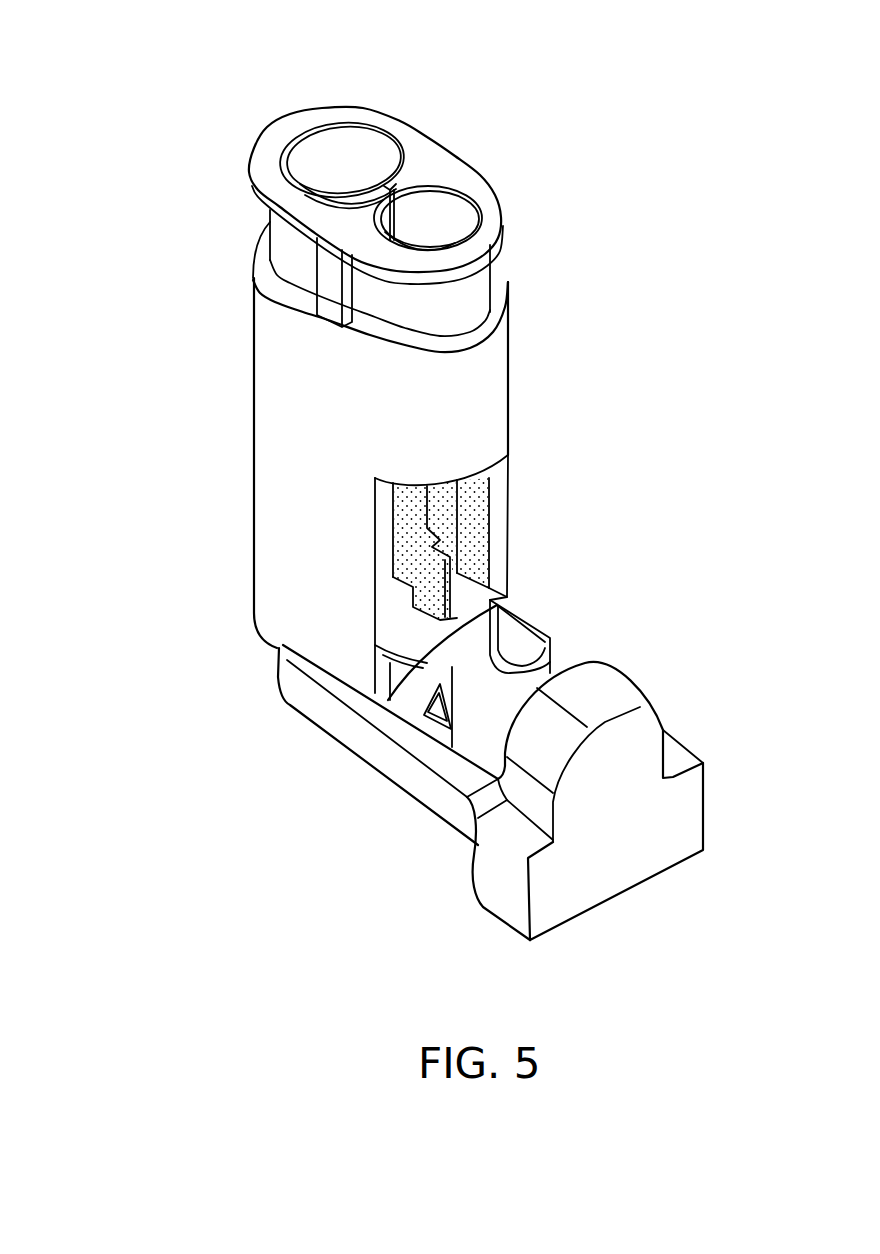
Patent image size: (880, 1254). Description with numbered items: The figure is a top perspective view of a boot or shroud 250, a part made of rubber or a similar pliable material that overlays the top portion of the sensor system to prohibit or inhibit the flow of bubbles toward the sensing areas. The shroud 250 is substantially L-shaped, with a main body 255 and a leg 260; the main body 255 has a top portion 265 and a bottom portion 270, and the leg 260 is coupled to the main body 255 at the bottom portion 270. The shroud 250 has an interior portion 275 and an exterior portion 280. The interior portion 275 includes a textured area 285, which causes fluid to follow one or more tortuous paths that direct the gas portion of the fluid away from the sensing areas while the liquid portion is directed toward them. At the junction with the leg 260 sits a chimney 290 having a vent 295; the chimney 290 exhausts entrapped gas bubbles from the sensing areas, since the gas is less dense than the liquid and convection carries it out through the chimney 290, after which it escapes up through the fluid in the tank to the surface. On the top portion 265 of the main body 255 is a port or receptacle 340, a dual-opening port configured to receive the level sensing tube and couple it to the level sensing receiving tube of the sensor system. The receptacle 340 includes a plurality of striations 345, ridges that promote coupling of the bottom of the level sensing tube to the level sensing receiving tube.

The boot or shroud 250 is at (160, 97).
The main body 255 is at (254, 441).
The leg 260 is at (687, 747).
The top portion 265 is at (243, 224).
The bottom portion 270 is at (262, 662).
The interior portion 275 is at (468, 505).
The exterior portion 280 is at (503, 383).
The textured area 285 is at (425, 512).
The chimney 290 is at (582, 648).
The vent 295 is at (535, 613).
The port or receptacle 340 is at (376, 172).
The striations 345 is at (340, 135).